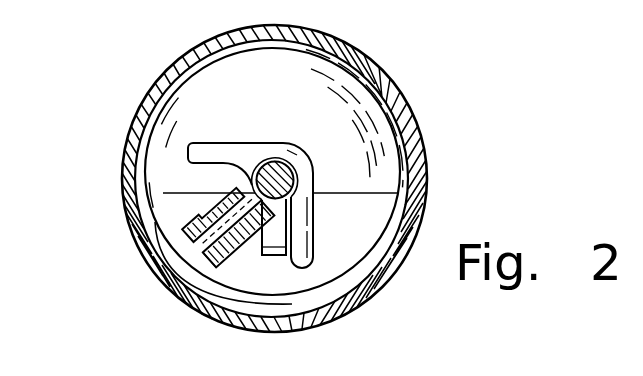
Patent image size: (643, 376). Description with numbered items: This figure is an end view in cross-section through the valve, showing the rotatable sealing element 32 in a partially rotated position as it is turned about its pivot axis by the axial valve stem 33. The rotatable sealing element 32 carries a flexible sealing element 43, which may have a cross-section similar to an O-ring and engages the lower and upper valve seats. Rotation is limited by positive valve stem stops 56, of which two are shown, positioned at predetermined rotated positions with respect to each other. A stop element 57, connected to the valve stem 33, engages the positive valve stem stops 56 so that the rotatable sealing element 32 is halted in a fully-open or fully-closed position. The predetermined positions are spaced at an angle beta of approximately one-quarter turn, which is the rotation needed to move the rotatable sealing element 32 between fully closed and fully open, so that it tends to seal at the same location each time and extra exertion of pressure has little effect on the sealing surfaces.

The positive valve stem stop 56 is at (214, 143).
The stop element 57 is at (274, 256).
The valve stem 33 is at (272, 143).
The rotatable sealing element 32 is at (196, 223).
The flexible sealing element 43 is at (208, 262).